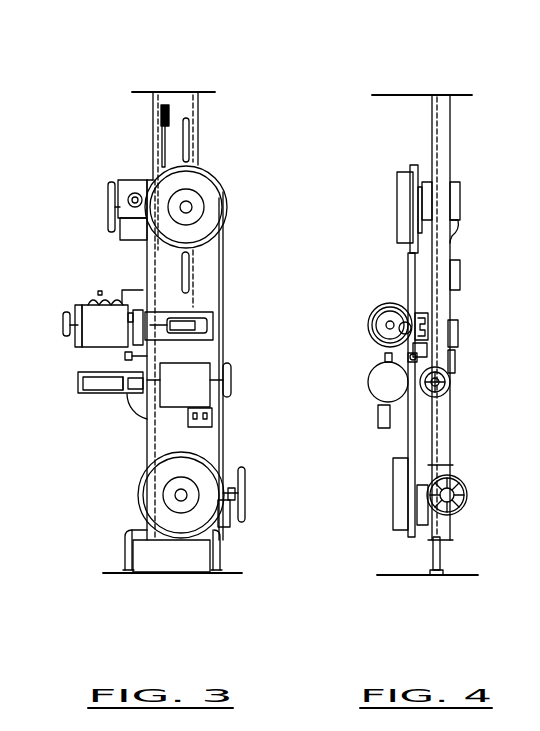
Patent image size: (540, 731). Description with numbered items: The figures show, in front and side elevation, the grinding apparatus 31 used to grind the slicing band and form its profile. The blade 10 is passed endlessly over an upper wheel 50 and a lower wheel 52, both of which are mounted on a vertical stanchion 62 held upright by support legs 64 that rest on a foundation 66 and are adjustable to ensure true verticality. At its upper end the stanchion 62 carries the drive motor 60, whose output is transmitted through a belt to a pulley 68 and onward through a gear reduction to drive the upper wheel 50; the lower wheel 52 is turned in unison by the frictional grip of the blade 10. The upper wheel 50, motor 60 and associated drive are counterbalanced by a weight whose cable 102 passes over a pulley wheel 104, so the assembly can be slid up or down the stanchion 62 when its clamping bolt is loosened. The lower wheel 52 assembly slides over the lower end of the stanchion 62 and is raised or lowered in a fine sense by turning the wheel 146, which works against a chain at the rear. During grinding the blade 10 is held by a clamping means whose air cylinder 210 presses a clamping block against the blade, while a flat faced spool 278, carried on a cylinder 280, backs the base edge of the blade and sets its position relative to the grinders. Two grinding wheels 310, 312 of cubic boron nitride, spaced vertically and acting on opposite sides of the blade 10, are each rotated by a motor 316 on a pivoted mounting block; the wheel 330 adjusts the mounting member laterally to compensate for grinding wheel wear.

In FIG. 3, the blade 10 is at (225, 278).
In FIG. 4, the blade 10 is at (407, 275).
In FIG. 3, the grinding apparatus 31 is at (236, 92).
In FIG. 4, the grinding apparatus 31 is at (384, 127).
In FIG. 3, the upper wheel 50 is at (222, 182).
In FIG. 4, the upper wheel 50 is at (402, 218).
In FIG. 3, the lower wheel 52 is at (140, 490).
In FIG. 4, the lower wheel 52 is at (398, 482).
In FIG. 3, the motor 60 is at (130, 230).
In FIG. 3, the vertical stanchion 62 is at (182, 100).
In FIG. 4, the vertical stanchion 62 is at (445, 132).
In FIG. 3, the support legs 64 is at (123, 547).
In FIG. 4, the support legs 64 is at (440, 558).
In FIG. 3, the foundation 66 is at (233, 572).
In FIG. 4, the foundation 66 is at (382, 573).
In FIG. 3, the pulley 68 is at (108, 195).
In FIG. 3, the cable 102 is at (162, 147).
In FIG. 3, the pulley wheel 104 is at (160, 117).
In FIG. 3, the wheel 146 is at (245, 493).
In FIG. 4, the wheel 146 is at (468, 497).
In FIG. 3, the air cylinder 210 is at (200, 327).
In FIG. 3, the flat faced spool 278 is at (127, 355).
In FIG. 4, the cylinder 280 is at (422, 320).
In FIG. 3, the grinding wheel 310 is at (140, 407).
In FIG. 3, the grinding wheel 312 is at (187, 317).
In FIG. 3, the motor 316 is at (102, 318).
In FIG. 4, the motor 316 is at (373, 337).
In FIG. 3, the wheel 330 is at (65, 327).
In FIG. 4, the wheel 330 is at (450, 387).